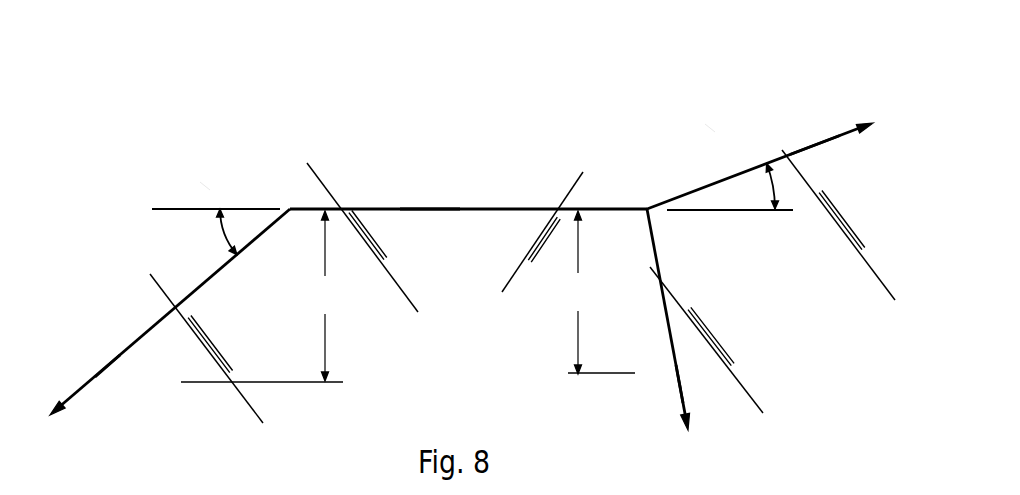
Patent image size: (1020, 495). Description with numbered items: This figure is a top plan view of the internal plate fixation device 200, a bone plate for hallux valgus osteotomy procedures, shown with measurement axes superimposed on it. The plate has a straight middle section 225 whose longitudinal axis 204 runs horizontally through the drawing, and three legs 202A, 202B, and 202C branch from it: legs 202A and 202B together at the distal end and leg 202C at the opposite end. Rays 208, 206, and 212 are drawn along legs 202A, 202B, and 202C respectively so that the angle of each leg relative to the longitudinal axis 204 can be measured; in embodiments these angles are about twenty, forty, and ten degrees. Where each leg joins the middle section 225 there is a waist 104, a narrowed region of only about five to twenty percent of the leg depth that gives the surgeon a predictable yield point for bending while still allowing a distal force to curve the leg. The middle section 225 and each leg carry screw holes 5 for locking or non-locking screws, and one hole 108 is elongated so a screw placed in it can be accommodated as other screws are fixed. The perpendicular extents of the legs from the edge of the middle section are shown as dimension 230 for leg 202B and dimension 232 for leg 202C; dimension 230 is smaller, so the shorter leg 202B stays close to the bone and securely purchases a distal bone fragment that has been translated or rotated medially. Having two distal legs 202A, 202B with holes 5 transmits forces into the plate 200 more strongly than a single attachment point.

The plate fixation device 200 is at (337, 85).
The middle section 225 is at (297, 127).
The waist 104 is at (197, 180).
The leg 202A is at (763, 92).
The leg 202B is at (613, 385).
The leg 202C is at (173, 390).
The ray 208 is at (807, 145).
The ray 212 is at (105, 372).
The ray 206 is at (678, 390).
The longitudinal axis 204 is at (422, 212).
The elongate hole 108 is at (371, 250).
The screw hole 5 is at (526, 297).
The dimension 230 is at (602, 292).
The dimension 232 is at (262, 296).